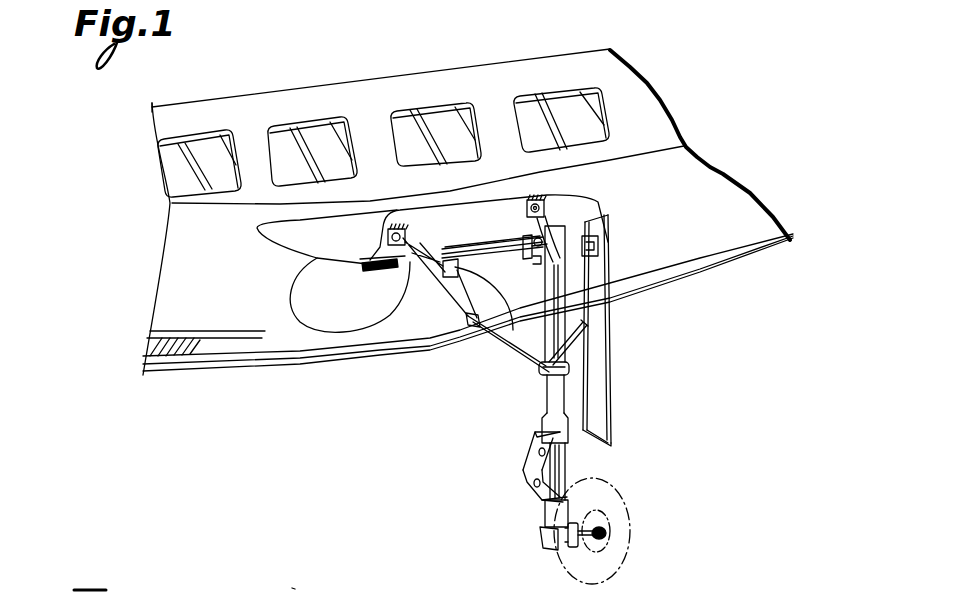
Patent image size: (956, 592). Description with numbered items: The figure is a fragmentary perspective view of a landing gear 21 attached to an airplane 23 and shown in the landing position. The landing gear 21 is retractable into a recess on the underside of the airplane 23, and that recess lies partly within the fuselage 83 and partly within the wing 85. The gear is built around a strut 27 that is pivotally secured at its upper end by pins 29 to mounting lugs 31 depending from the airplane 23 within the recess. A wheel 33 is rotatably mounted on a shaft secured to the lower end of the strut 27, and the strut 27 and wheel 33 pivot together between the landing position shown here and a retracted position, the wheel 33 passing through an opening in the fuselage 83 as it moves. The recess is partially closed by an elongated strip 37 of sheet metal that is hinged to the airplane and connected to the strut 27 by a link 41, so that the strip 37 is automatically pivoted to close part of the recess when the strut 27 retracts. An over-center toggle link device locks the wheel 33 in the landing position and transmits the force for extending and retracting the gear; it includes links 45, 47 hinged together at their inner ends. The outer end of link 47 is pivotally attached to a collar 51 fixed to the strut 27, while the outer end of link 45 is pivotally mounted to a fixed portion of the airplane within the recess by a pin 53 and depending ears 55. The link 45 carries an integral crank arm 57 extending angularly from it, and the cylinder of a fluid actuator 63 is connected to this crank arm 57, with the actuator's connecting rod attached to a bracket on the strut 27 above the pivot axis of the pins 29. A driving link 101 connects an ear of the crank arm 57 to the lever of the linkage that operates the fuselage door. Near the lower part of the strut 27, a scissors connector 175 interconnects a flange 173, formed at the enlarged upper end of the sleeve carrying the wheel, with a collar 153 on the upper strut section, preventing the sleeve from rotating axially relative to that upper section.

The landing gear 21 is at (544, 399).
The airplane 23 is at (268, 92).
The strut 27 is at (544, 393).
The pins 29 is at (542, 207).
The mounting lugs 31 is at (548, 200).
The wheel 33 is at (615, 490).
The elongated strip 37 is at (600, 380).
The link 41 is at (578, 342).
The link 45 is at (452, 305).
The link 47 is at (503, 346).
The collar 51 is at (570, 368).
The pin 53 is at (390, 227).
The depending ears 55 is at (386, 238).
The crank arm 57 is at (440, 240).
The actuator 63 is at (503, 242).
The fuselage 83 is at (260, 333).
The wing 85 is at (700, 183).
The driving link 101 is at (372, 272).
The collar 153 is at (545, 425).
The flange 173 is at (575, 495).
The scissors connector 175 is at (523, 463).